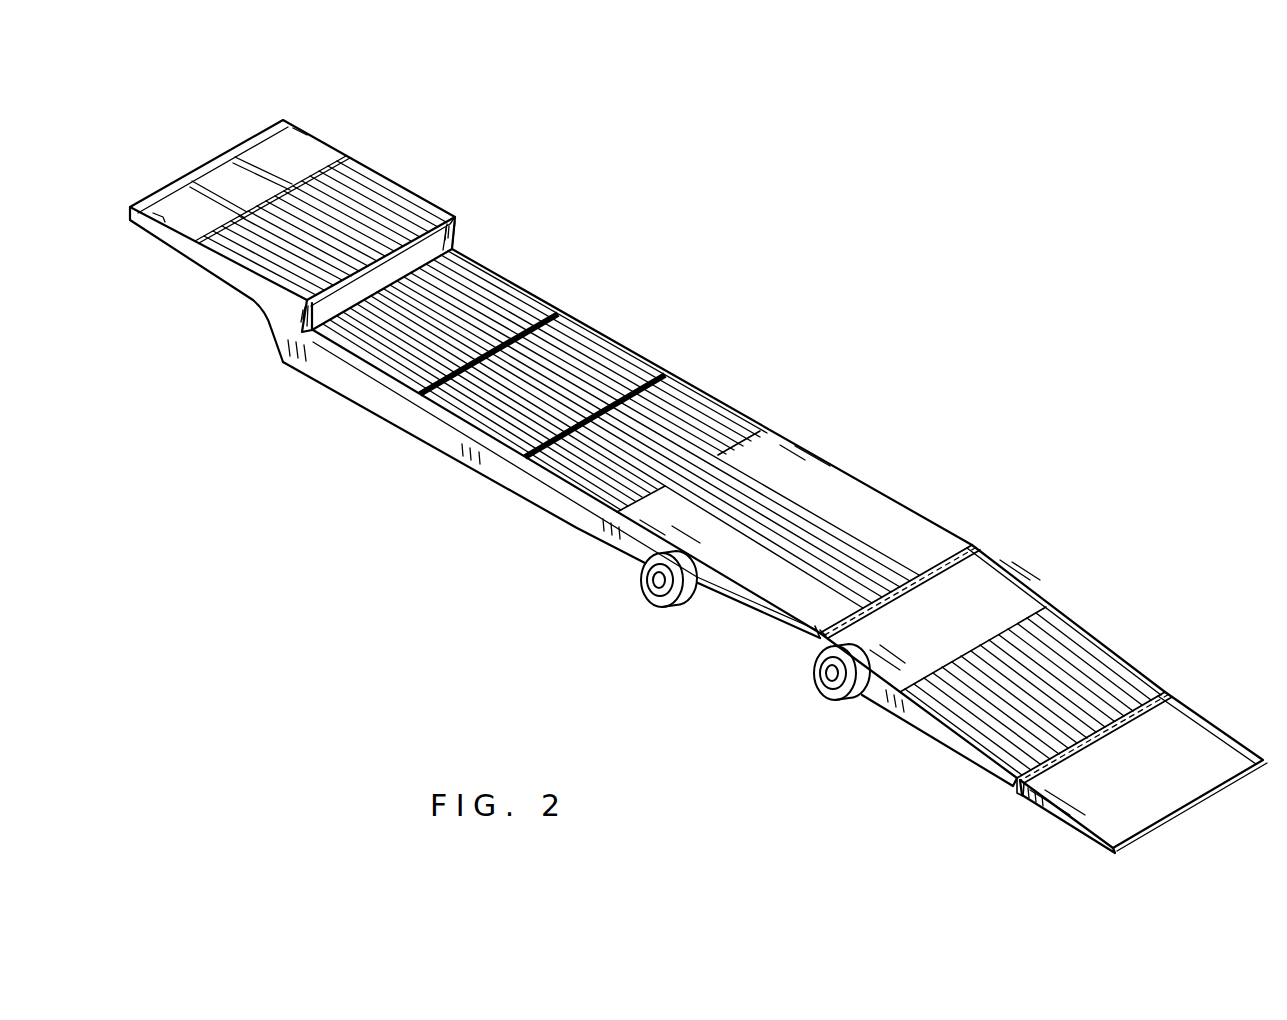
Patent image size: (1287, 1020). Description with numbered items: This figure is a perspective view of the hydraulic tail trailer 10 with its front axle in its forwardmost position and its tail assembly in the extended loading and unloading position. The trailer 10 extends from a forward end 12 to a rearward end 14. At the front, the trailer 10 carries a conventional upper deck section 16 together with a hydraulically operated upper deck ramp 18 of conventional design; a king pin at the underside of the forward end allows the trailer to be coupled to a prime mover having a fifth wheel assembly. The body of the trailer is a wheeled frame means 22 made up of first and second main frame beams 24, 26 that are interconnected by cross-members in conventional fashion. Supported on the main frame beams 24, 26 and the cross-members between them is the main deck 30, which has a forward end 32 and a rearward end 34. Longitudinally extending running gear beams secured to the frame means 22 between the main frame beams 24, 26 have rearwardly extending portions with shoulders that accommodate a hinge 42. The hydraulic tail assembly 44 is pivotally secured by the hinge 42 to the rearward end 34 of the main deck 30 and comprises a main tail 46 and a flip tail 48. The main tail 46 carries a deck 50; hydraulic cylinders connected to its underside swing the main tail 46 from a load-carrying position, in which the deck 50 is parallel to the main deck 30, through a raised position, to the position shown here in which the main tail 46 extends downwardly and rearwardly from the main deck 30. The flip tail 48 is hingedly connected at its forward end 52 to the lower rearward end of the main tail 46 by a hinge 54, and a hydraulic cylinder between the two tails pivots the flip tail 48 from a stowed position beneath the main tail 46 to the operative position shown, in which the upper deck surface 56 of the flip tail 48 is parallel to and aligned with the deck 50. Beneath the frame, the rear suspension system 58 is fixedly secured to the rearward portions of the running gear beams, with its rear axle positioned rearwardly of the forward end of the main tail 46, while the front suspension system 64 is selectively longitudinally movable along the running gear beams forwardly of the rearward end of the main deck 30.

The hydraulic tail trailer 10 is at (698, 475).
The forward end 12 is at (317, 212).
The rearward end 14 is at (1117, 747).
The upper deck section 16 is at (387, 210).
The upper deck ramp 18 is at (487, 303).
The wheeled frame means 22 is at (654, 455).
The first main frame beam 24 is at (582, 517).
The second main frame beam 26 is at (876, 490).
The main deck 30 is at (603, 357).
The forward end of main deck 32 is at (545, 320).
The rearward end of main deck 34 is at (970, 544).
The hinge 42 is at (808, 618).
The hydraulic tail assembly 44 is at (966, 701).
The main tail 46 is at (977, 742).
The flip tail 48 is at (1083, 829).
The deck of main tail 50 is at (940, 633).
The forward end of flip tail 52 is at (1005, 791).
The hinge 54 is at (1112, 733).
The upper deck surface of flip tail 56 is at (1140, 801).
The rear suspension system 58 is at (826, 712).
The front suspension system 64 is at (652, 598).